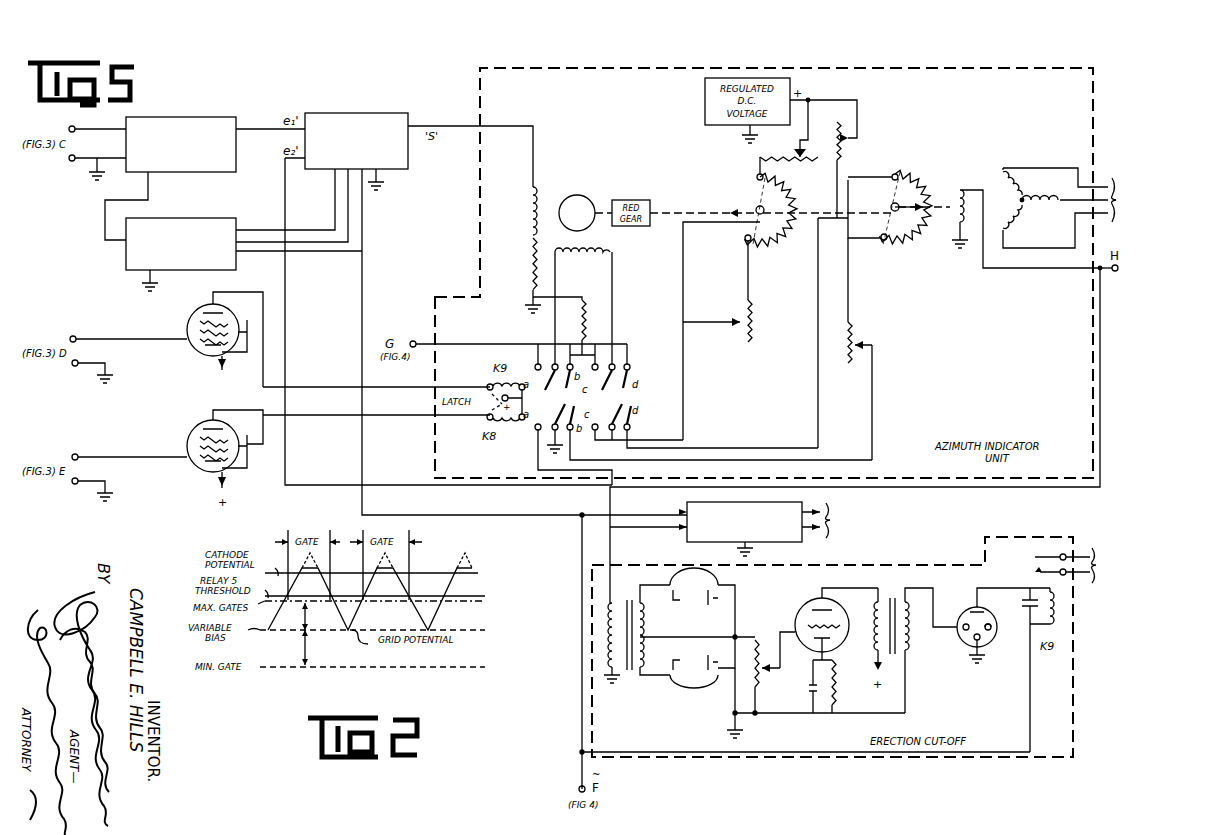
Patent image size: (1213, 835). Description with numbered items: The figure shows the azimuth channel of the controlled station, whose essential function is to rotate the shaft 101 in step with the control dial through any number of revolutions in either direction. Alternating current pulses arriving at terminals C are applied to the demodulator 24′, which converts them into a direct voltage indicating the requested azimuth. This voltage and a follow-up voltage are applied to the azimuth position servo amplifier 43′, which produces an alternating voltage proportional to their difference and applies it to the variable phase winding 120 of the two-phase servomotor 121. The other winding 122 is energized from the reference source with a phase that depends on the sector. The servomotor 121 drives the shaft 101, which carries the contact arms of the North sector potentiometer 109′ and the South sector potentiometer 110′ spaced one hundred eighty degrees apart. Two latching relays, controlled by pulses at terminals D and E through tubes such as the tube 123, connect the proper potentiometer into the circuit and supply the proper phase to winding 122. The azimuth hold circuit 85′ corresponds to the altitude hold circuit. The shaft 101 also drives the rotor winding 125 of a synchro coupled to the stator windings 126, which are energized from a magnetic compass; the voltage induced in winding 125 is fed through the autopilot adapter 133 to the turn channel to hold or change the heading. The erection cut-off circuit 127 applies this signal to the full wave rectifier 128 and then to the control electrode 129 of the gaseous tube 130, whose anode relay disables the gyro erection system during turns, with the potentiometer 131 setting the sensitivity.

The demodulator 24′ is at (222, 117).
The azimuth position servo amplifier 43′ is at (370, 113).
The azimuth hold circuit 85′ is at (206, 218).
The shaft 101 is at (665, 212).
The North sector potentiometer 109′ is at (880, 170).
The South sector potentiometer 110′ is at (732, 228).
The variable phase winding 120 is at (531, 225).
The two-phase servomotor 121 is at (582, 184).
The winding 122 is at (610, 252).
The tube 123 is at (201, 310).
The rotor winding 125 is at (962, 222).
The stator windings 126 is at (1030, 192).
The erection cut-off circuit 127 is at (1060, 534).
The full wave rectifier 128 is at (632, 683).
The control electrode 129 is at (963, 640).
The gaseous tube 130 is at (994, 638).
The potentiometer 131 is at (766, 676).
The autopilot adapter 133 is at (782, 545).